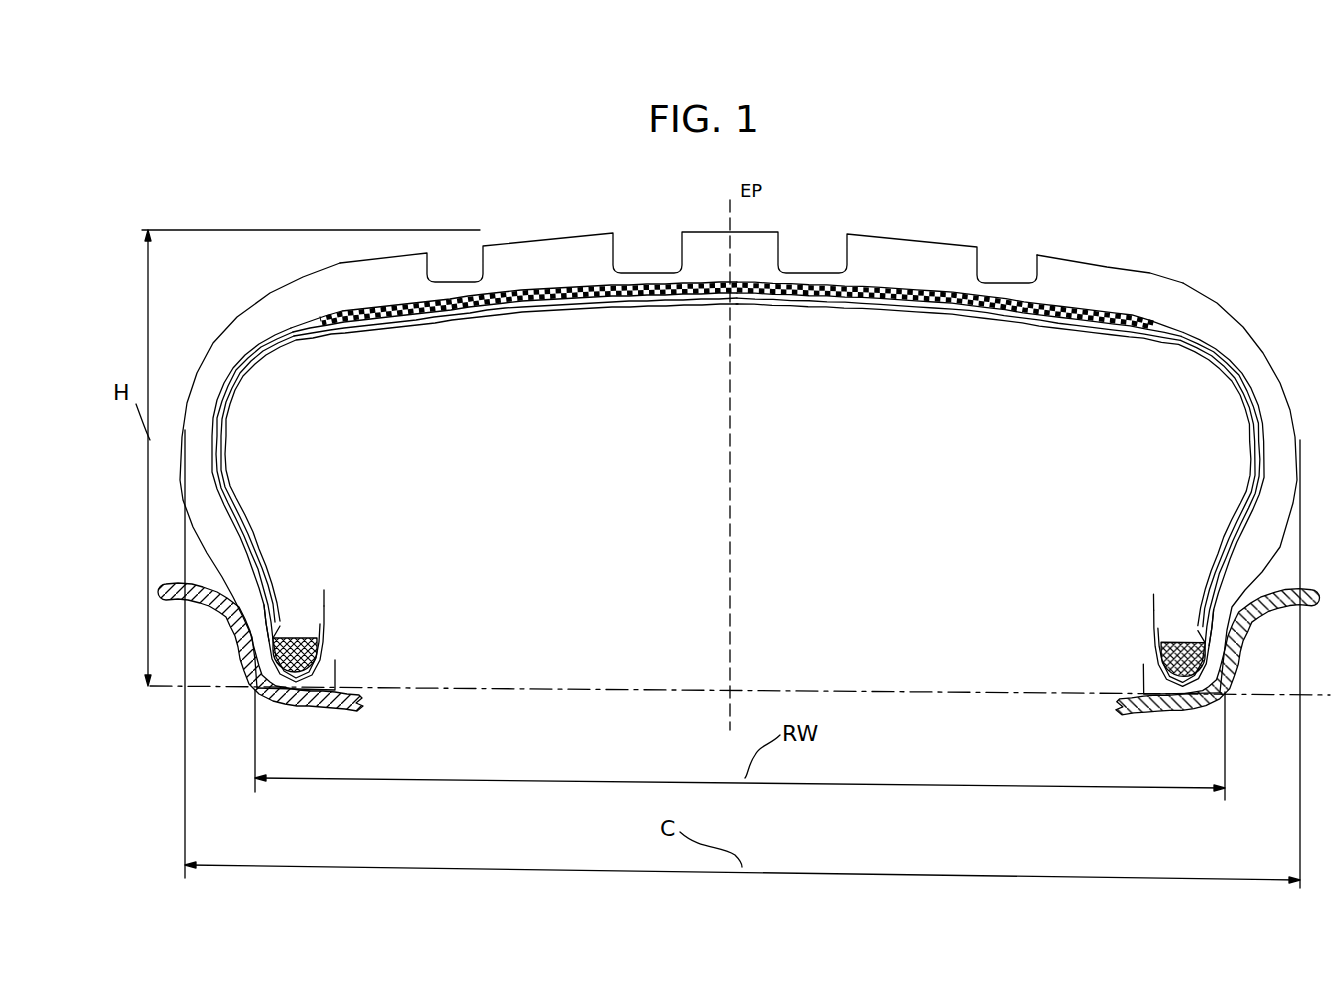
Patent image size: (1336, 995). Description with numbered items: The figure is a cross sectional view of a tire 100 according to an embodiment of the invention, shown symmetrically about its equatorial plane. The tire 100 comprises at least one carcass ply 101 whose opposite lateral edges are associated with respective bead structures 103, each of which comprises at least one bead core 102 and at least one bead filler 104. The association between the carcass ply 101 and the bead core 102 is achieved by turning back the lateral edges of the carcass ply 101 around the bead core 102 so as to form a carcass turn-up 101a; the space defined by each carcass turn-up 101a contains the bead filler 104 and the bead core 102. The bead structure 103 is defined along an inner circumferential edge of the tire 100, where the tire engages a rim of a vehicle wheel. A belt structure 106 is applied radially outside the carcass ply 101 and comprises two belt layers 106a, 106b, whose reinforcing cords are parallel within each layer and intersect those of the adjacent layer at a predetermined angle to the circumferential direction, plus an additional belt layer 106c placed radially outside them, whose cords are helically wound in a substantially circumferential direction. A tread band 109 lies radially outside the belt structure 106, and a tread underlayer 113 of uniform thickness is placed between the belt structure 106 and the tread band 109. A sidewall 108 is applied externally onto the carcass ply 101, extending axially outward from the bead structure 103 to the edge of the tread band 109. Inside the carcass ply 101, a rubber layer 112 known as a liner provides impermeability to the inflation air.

The tire 100 is at (1128, 236).
The carcass ply 101 is at (214, 428).
The carcass turn-up 101a is at (264, 580).
The bead core 102 is at (317, 659).
The bead structure 103 is at (323, 634).
The bead filler 104 is at (287, 606).
The belt structure 106 is at (553, 287).
The belt layer 106a is at (630, 296).
The belt layer 106b is at (567, 303).
The additional belt layer 106c is at (510, 290).
The sidewall 108 is at (198, 418).
The tread band 109 is at (893, 256).
The rubber layer (liner) 112 is at (232, 396).
The tread underlayer 113 is at (943, 290).